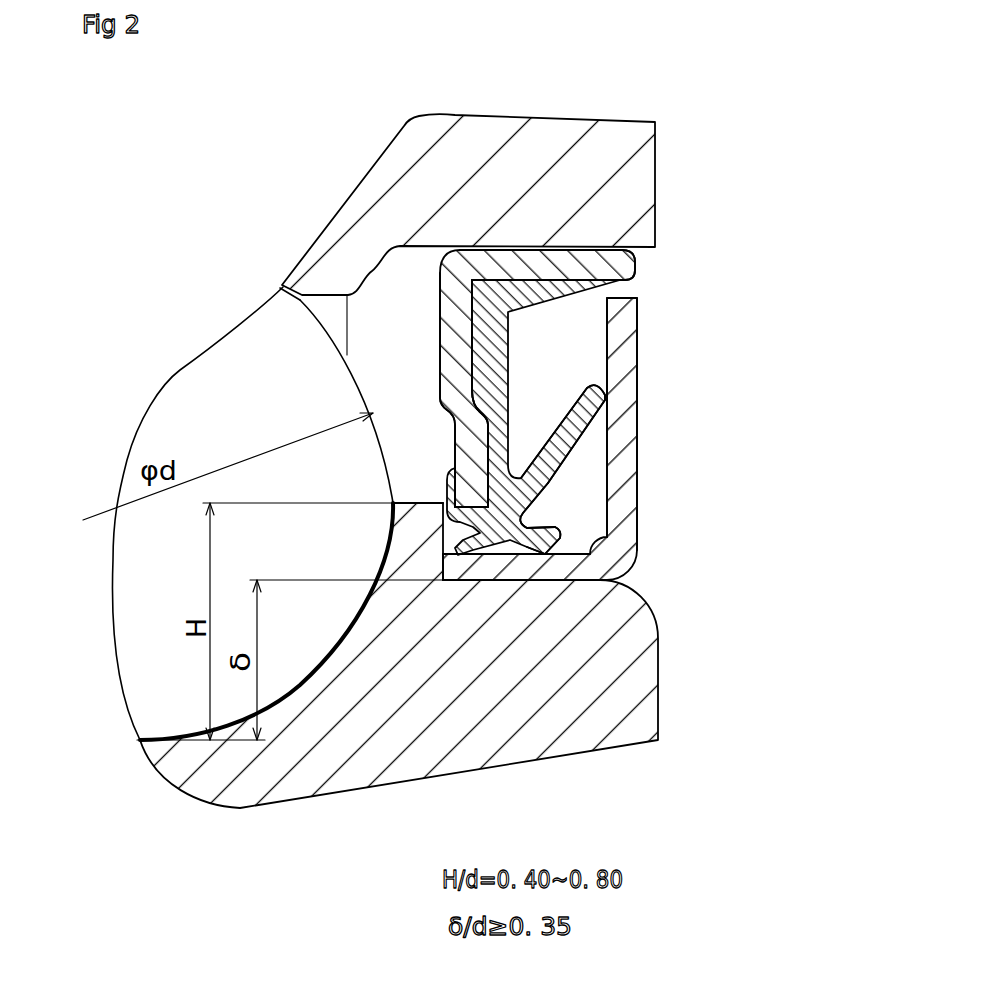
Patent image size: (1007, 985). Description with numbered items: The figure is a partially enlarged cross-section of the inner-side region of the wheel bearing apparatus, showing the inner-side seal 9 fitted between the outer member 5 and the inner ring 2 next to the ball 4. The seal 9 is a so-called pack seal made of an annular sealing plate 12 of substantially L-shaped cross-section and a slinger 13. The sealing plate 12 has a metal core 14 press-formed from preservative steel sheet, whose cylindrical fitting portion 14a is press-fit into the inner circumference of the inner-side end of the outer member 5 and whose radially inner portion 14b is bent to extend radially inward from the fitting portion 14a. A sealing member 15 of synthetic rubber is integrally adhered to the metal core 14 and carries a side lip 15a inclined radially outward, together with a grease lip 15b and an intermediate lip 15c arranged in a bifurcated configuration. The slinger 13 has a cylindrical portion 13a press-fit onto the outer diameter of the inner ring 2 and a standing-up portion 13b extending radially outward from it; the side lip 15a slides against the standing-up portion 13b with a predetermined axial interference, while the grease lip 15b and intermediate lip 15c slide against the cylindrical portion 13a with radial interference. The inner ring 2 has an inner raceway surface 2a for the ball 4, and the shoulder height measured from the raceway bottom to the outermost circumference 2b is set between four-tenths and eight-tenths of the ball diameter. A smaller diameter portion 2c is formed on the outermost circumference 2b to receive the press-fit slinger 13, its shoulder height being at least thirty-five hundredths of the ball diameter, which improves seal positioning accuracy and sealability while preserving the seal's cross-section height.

The inner ring 2 is at (439, 635).
The inner raceway surface 2a is at (367, 597).
The outermost circumference 2b is at (413, 502).
The smaller diameter portion 2c is at (510, 565).
The ball 4 is at (223, 378).
The outer member 5 is at (370, 195).
The inner-side seal 9 is at (667, 313).
The sealing plate 12 is at (777, 367).
The slinger 13 is at (723, 492).
The cylindrical portion 13a is at (568, 554).
The standing-up portion 13b is at (633, 495).
The metal core 14 is at (715, 340).
The cylindrical fitting portion 14a is at (545, 263).
The radially inner portion 14b is at (463, 363).
The sealing member 15 is at (718, 413).
The side lip 15a is at (588, 420).
The grease lip 15b is at (483, 505).
The intermediate lip 15c is at (557, 527).